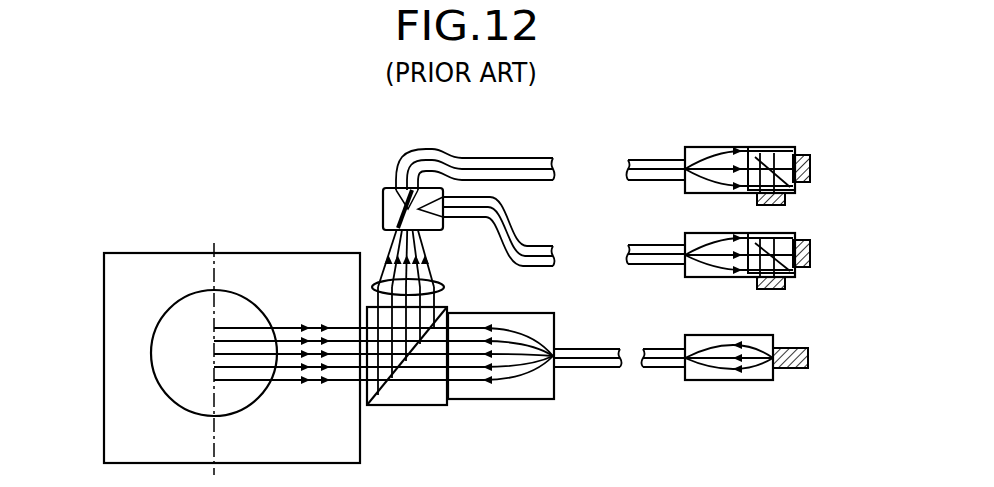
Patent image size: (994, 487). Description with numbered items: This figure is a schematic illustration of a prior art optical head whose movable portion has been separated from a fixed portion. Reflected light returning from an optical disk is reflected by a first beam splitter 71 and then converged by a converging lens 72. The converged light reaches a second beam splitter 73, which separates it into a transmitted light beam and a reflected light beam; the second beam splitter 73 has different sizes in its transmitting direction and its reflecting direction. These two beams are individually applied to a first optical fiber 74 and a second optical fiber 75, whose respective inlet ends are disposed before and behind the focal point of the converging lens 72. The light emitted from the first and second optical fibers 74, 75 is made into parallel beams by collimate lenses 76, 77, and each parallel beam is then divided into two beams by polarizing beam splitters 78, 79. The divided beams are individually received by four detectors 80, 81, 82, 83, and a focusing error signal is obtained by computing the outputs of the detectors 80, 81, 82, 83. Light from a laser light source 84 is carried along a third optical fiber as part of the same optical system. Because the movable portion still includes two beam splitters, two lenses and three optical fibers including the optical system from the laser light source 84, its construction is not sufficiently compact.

The first beam splitter 71 is at (428, 403).
The converging lens 72 is at (446, 287).
The second beam splitter 73 is at (383, 205).
The first optical fiber 74 is at (526, 157).
The second optical fiber 75 is at (532, 250).
The collimate lens 76 is at (720, 150).
The collimate lens 77 is at (706, 243).
The polarizing beam splitter 78 is at (769, 148).
The polarizing beam splitter 79 is at (786, 233).
The detector 80 is at (808, 160).
The detector 81 is at (789, 198).
The detector 82 is at (810, 255).
The detector 83 is at (790, 284).
The laser light source 84 is at (808, 364).